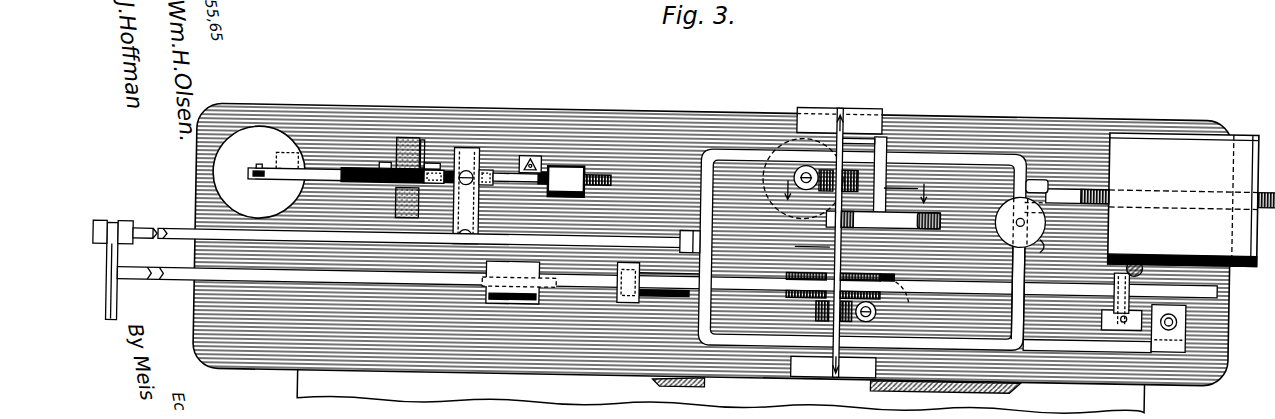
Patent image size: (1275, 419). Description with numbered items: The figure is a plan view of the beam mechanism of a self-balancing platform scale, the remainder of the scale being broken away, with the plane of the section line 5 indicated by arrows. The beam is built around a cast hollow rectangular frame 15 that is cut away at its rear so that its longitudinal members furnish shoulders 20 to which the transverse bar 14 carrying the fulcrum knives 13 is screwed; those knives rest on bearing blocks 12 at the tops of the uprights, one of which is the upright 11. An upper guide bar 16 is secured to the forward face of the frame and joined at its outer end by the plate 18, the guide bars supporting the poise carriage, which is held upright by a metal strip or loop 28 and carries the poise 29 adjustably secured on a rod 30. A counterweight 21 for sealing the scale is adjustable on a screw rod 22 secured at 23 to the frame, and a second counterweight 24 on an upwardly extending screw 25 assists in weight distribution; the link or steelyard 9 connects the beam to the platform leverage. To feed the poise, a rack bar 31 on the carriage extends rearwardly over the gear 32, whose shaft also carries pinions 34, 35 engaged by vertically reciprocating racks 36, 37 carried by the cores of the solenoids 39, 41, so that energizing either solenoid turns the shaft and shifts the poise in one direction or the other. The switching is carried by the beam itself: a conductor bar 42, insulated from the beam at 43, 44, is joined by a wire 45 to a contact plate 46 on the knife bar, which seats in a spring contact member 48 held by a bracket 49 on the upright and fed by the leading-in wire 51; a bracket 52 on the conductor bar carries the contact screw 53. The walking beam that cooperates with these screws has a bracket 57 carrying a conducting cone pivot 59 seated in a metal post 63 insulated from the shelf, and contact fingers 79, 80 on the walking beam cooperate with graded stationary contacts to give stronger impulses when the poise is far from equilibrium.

The section line 5— 5 is at (855, 196).
The link or steelyard 9 is at (186, 282).
The upright 11 is at (805, 97).
The bearing blocks 12 is at (287, 160).
The fulcrum knives 13 is at (843, 118).
The transverse bar 14 is at (835, 244).
The cast hollow frame 15 is at (980, 140).
The upper guide bar 16 is at (661, 300).
The plate 18 is at (118, 299).
The shoulders 20 is at (663, 262).
The counterweight 21 is at (1191, 200).
The screw rod 22 is at (1076, 174).
The securing point of screw rod 23 is at (1022, 183).
The second counterweight 24 is at (1030, 236).
The screw 25 is at (1038, 219).
The metal strip or loop 28 is at (620, 285).
The poise 29 is at (512, 300).
The rod 30 is at (553, 282).
The rack bar 31 is at (995, 282).
The gear 32 is at (882, 266).
The pinion 34 is at (876, 155).
The pinion 35 is at (817, 298).
The rack 36 is at (877, 303).
The rack 37 is at (791, 177).
The solenoid 39 is at (965, 282).
The solenoid 41 is at (760, 177).
The conductor bar 42 is at (413, 240).
The insulation 43 is at (1118, 365).
The insulation 44 is at (110, 223).
The wire 45 is at (798, 237).
The contact plate 46 is at (855, 217).
The spring contact member 48 is at (936, 217).
The bracket 49 is at (884, 181).
The leading-in wire 51 is at (455, 195).
The bracket 52 is at (479, 204).
The contact screw 53 is at (472, 168).
The bracket 57 is at (405, 134).
The cone pivot 59 is at (416, 134).
The metal post 63 is at (428, 137).
The contact finger 79 is at (386, 158).
The contact finger 80 is at (430, 162).